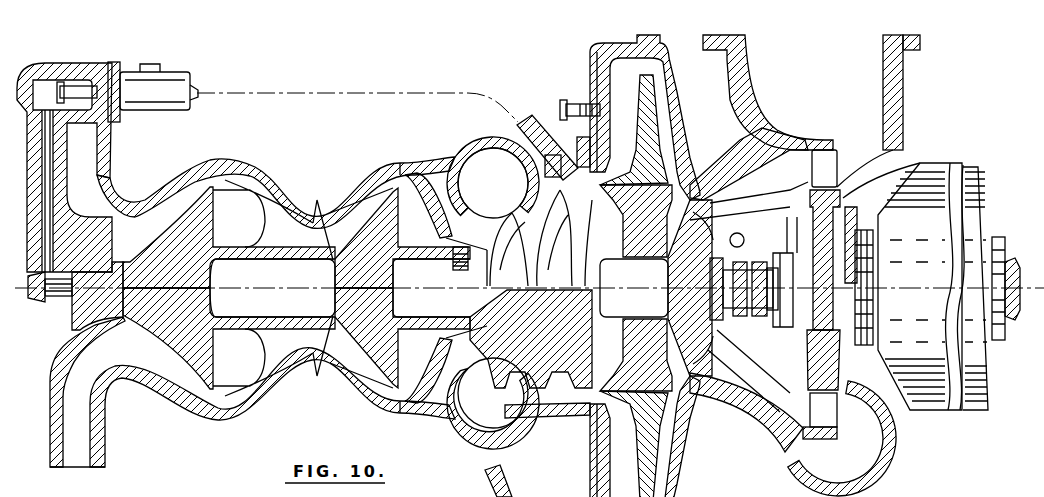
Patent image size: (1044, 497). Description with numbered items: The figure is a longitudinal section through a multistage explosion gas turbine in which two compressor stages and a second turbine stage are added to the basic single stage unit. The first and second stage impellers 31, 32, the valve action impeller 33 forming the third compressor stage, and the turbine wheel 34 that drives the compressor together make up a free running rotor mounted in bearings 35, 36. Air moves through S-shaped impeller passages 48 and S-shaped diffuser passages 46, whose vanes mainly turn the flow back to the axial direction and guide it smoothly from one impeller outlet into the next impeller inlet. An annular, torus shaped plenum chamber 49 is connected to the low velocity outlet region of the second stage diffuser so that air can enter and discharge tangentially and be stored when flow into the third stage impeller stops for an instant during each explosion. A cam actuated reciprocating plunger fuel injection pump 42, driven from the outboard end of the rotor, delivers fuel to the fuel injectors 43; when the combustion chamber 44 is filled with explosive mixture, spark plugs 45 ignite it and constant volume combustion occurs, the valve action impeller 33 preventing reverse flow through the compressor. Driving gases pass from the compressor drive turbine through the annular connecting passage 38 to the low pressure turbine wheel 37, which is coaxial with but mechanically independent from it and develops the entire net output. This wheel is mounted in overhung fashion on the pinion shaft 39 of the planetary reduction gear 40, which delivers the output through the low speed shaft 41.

The first stage impeller 31 is at (200, 226).
The second stage impeller 32 is at (380, 225).
The valve action impeller 33 is at (520, 205).
The turbine wheel 34 is at (690, 207).
The bearing 35 is at (73, 303).
The bearing 36 is at (760, 262).
The low pressure turbine wheel 37 is at (872, 223).
The annular connecting passage 38 is at (743, 188).
The pinion shaft 39 is at (862, 283).
The reduction gear 40 is at (938, 182).
The low speed shaft 41 is at (1012, 263).
The fuel injection pump 42 is at (130, 83).
The fuel injector 43 is at (530, 127).
The combustion chamber 44 is at (618, 82).
The spark plug 45 is at (582, 102).
The diffuser passage 46 is at (265, 195).
The impeller passage 48 is at (165, 190).
The plenum chamber 49 is at (484, 157).